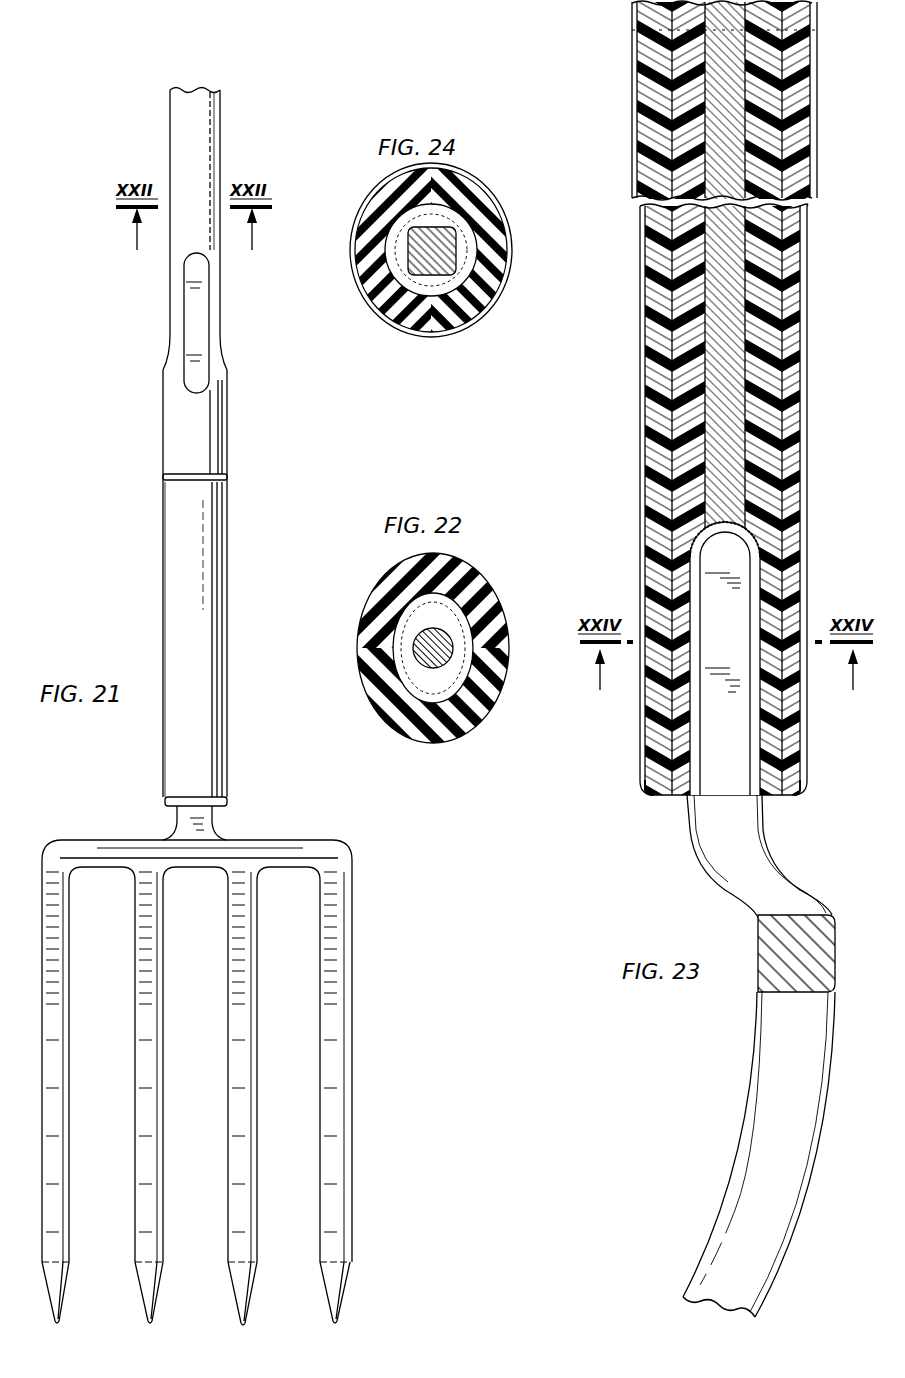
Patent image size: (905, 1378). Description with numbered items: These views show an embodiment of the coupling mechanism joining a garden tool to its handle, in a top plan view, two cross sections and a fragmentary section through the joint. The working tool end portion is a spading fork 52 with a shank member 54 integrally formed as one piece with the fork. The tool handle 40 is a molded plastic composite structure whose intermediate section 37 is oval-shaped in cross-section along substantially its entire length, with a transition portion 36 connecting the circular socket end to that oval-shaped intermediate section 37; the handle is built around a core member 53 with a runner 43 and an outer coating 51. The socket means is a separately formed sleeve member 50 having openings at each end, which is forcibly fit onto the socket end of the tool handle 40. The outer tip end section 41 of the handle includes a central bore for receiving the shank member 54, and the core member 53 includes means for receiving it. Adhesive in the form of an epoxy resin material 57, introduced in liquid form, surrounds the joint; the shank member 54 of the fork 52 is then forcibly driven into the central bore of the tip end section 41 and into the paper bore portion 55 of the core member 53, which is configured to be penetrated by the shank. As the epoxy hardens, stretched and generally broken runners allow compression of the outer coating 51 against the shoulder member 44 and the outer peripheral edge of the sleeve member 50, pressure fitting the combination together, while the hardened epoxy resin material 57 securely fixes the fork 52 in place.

In FIG. 21, the tool handle 40 is at (158, 127).
In FIG. 21, the intermediate section 37 is at (221, 137).
In FIG. 21, the transition portion 36 is at (226, 346).
In FIG. 21, the shoulder member 44 is at (229, 478).
In FIG. 23, the shoulder member 44 is at (640, 40).
In FIG. 21, the sleeve member 50 is at (229, 621).
In FIG. 24, the sleeve member 50 is at (480, 310).
In FIG. 23, the sleeve member 50 is at (812, 482).
In FIG. 21, the shank member 54 is at (214, 821).
In FIG. 24, the shank member 54 is at (460, 240).
In FIG. 23, the shank member 54 is at (733, 777).
In FIG. 21, the spading fork 52 is at (356, 1084).
In FIG. 23, the spading fork 52 is at (798, 897).
In FIG. 24, the outer coating 51 is at (378, 207).
In FIG. 22, the outer coating 51 is at (484, 701).
In FIG. 24, the epoxy resin material 57 is at (483, 196).
In FIG. 23, the epoxy resin material 57 is at (649, 790).
In FIG. 24, the core member 53 is at (402, 249).
In FIG. 22, the core member 53 is at (396, 661).
In FIG. 22, the paper bore portion 55 is at (440, 634).
In FIG. 23, the runner 43 is at (662, 379).
In FIG. 23, the outer tip end section 41 is at (778, 732).